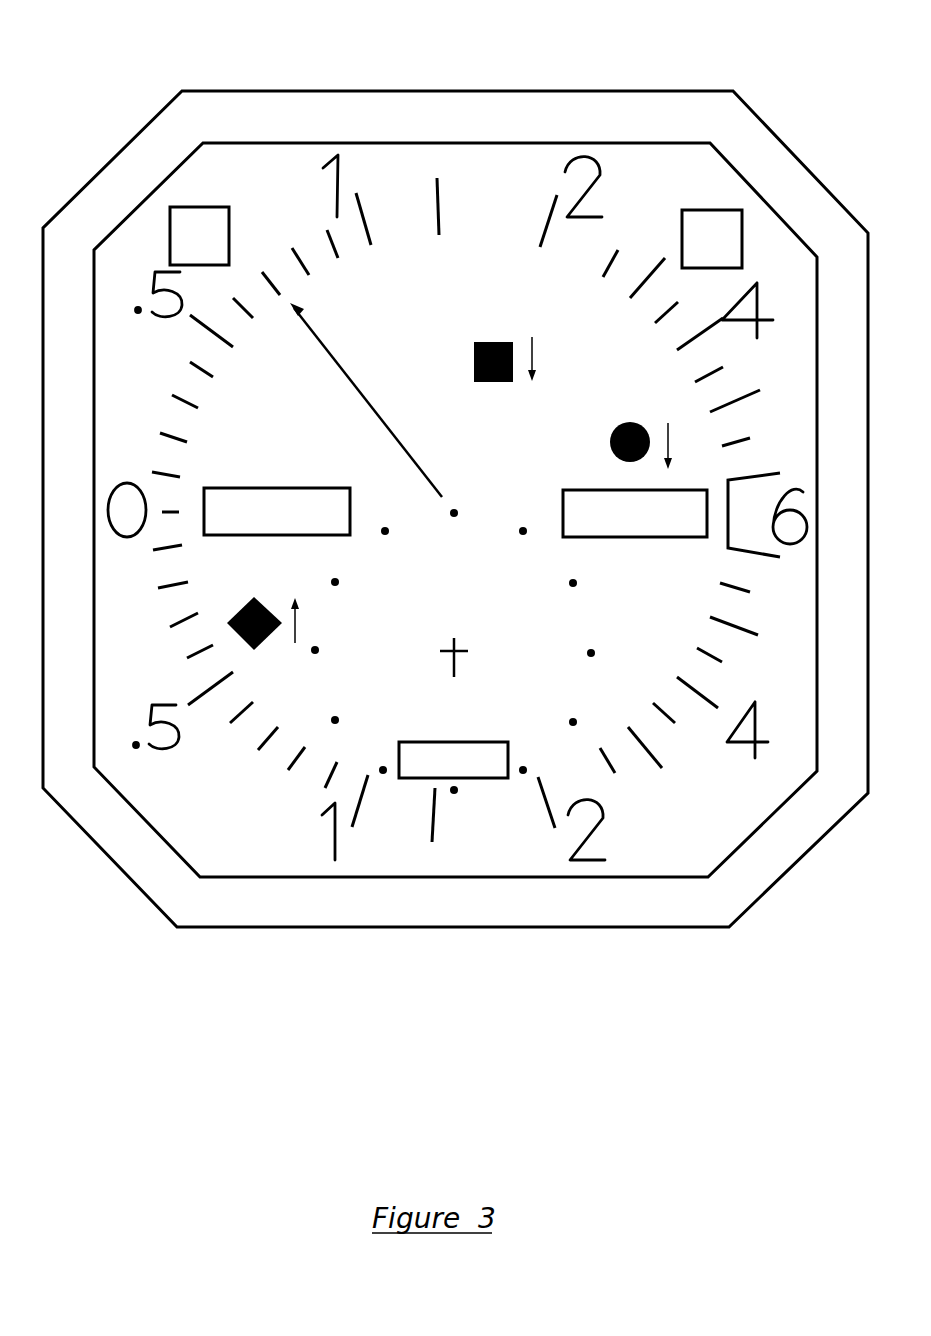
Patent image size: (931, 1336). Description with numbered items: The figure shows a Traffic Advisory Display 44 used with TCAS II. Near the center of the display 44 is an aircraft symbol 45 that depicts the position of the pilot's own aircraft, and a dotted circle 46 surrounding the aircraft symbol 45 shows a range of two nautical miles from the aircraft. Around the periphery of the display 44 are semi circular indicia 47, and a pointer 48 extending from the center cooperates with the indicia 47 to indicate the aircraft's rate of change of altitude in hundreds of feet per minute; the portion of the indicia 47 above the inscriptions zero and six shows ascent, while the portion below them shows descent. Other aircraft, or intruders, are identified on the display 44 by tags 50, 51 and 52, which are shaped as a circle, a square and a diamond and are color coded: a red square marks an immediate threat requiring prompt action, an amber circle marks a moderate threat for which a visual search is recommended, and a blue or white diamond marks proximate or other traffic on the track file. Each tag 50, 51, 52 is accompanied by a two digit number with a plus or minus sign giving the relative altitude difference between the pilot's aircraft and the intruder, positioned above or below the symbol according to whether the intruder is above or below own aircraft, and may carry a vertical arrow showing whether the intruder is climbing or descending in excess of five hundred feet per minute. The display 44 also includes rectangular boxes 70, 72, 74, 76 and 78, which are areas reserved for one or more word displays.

The Traffic Advisory Display 44 is at (752, 92).
The aircraft symbol 45 is at (458, 663).
The dotted circle 46 is at (573, 722).
The semi circular indicia 47 is at (457, 507).
The pointer 48 is at (370, 404).
The tag 50 is at (611, 433).
The tag 51 is at (490, 342).
The tag 52 is at (271, 638).
The rectangular box 70 is at (230, 235).
The rectangular box 72 is at (710, 209).
The rectangular box 74 is at (276, 487).
The rectangular box 76 is at (612, 489).
The rectangular box 78 is at (452, 741).